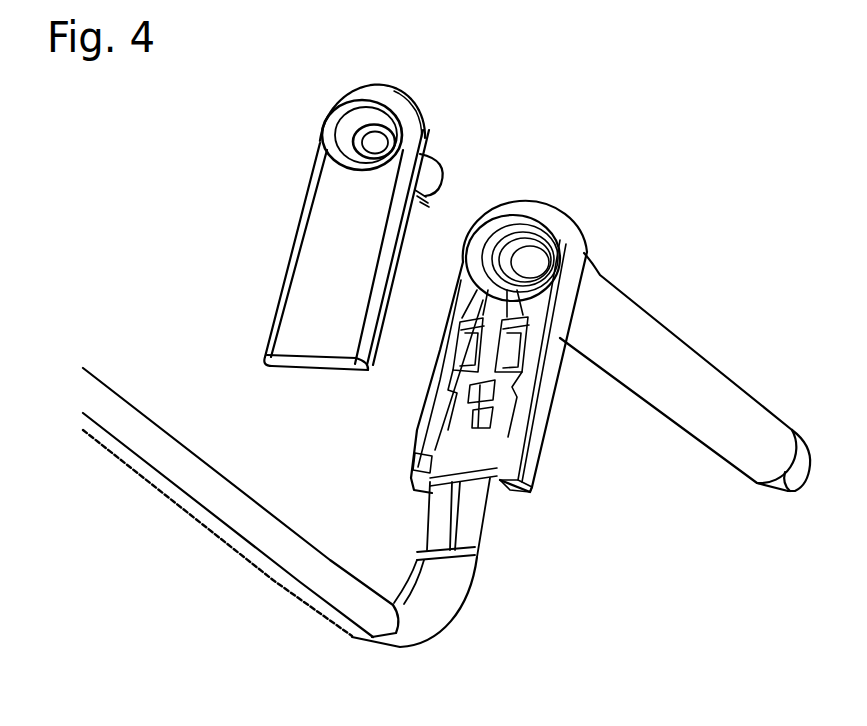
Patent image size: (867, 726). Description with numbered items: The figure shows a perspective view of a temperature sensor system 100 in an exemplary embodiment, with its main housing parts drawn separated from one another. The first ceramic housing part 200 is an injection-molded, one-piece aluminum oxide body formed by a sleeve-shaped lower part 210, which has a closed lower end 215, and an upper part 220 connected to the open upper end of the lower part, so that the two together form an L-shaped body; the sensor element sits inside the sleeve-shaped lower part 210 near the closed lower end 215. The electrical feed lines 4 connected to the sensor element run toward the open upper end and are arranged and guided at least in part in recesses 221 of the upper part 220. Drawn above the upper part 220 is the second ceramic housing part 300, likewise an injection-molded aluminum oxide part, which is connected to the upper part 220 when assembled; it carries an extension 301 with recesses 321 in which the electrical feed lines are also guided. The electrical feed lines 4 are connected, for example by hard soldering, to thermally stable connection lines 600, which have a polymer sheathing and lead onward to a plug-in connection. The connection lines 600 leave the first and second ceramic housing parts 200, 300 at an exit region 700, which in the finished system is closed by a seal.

The temperature sensor system 100 is at (227, 143).
The first ceramic housing part 200 is at (716, 202).
The sleeve-shaped lower part 210 is at (630, 330).
The closed lower end 215 is at (797, 494).
The upper part 220 is at (580, 251).
The recesses 221 is at (490, 352).
The electrical feed lines 4 is at (540, 290).
The second ceramic housing part 300 is at (313, 260).
The extension 301 is at (440, 167).
The recesses 321 is at (430, 203).
The connection lines 600 is at (438, 517).
The exit region 700 is at (517, 495).